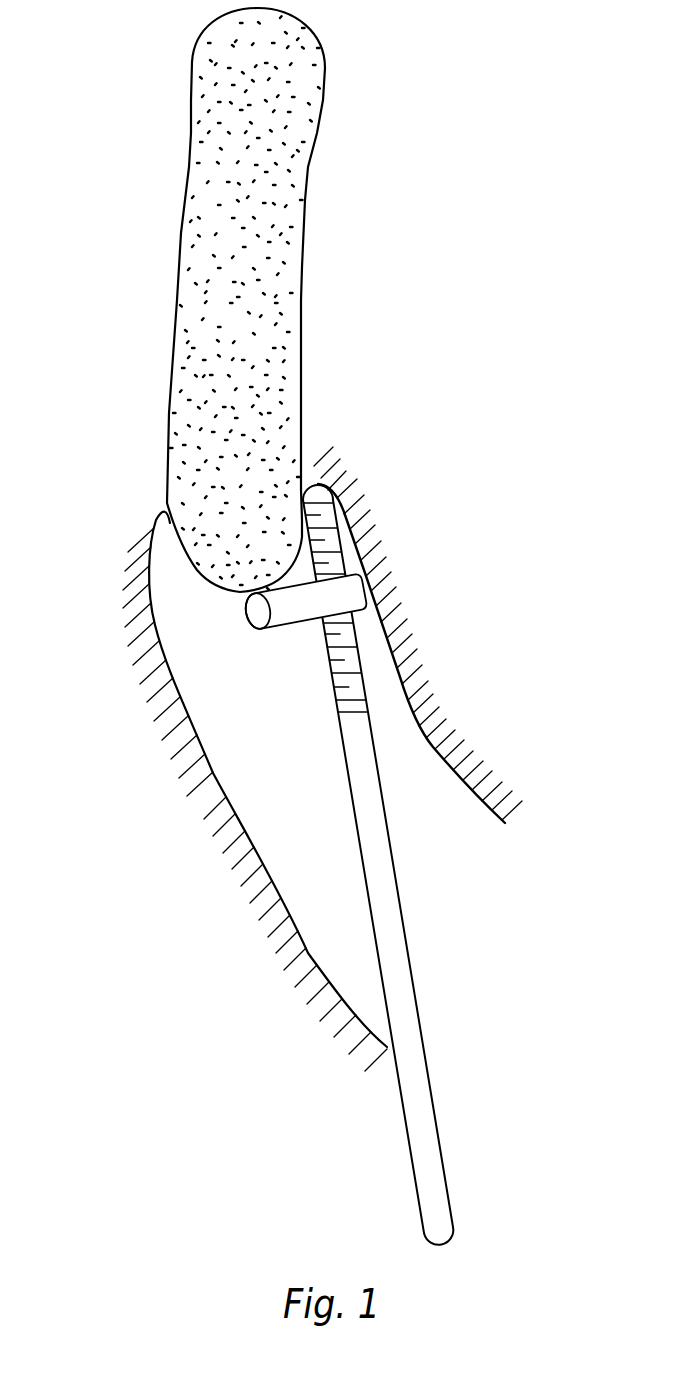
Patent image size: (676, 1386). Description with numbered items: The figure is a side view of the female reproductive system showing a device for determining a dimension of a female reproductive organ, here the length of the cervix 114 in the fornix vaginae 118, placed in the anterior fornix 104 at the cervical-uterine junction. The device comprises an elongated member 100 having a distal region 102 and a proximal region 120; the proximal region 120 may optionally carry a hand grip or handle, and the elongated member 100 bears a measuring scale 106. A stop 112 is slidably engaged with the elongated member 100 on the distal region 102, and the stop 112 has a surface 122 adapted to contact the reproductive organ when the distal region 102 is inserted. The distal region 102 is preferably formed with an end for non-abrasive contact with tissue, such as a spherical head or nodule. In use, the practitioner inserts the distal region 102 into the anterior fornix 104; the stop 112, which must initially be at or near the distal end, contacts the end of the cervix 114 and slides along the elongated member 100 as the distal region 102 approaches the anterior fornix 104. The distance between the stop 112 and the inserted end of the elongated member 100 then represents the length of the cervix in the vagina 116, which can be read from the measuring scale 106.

The elongated member 100 is at (389, 905).
The distal region 102 is at (297, 673).
The anterior fornix 104 is at (343, 531).
The measuring scale 106 is at (338, 658).
The stop 112 is at (360, 592).
The cervix 114 is at (222, 560).
The vagina 116 is at (291, 900).
The fornix vaginae 118 is at (165, 580).
The proximal region 120 is at (450, 1152).
The surface 122 is at (258, 630).